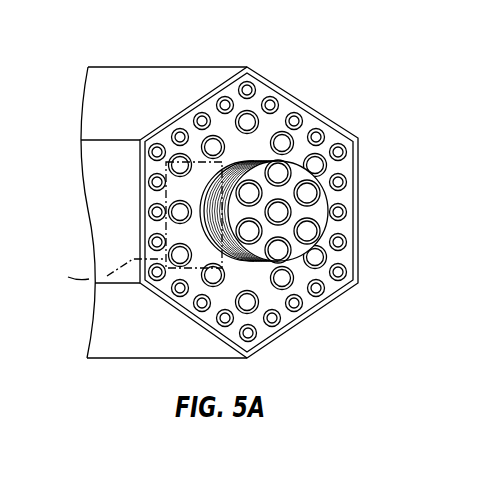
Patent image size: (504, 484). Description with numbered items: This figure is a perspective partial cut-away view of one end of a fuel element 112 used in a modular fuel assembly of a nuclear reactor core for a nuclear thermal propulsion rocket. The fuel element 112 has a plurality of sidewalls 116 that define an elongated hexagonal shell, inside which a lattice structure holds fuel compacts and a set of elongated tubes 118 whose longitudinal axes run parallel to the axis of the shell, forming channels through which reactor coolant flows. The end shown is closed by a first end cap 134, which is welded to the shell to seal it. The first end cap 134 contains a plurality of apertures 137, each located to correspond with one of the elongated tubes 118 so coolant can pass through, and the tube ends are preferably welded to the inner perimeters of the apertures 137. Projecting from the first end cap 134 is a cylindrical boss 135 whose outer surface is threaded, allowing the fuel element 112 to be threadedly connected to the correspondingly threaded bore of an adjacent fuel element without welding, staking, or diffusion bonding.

The fuel element 112 is at (246, 186).
The sidewalls 116 is at (126, 86).
The first end cap 134 is at (300, 207).
The cylindrical boss 135 is at (333, 196).
The apertures 137 is at (353, 252).
The elongated tube 118 is at (300, 307).